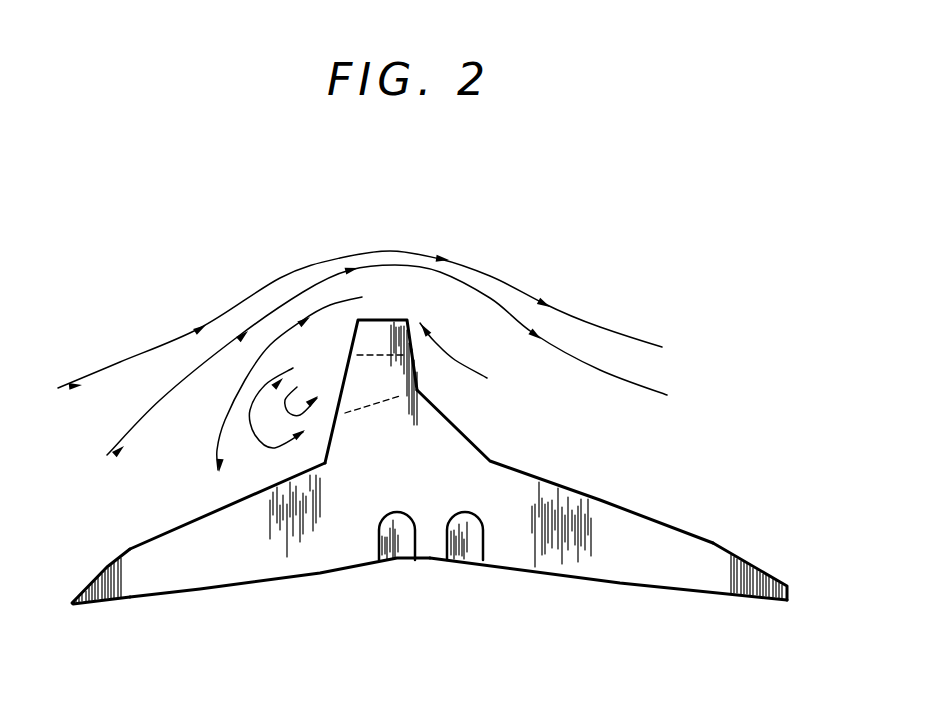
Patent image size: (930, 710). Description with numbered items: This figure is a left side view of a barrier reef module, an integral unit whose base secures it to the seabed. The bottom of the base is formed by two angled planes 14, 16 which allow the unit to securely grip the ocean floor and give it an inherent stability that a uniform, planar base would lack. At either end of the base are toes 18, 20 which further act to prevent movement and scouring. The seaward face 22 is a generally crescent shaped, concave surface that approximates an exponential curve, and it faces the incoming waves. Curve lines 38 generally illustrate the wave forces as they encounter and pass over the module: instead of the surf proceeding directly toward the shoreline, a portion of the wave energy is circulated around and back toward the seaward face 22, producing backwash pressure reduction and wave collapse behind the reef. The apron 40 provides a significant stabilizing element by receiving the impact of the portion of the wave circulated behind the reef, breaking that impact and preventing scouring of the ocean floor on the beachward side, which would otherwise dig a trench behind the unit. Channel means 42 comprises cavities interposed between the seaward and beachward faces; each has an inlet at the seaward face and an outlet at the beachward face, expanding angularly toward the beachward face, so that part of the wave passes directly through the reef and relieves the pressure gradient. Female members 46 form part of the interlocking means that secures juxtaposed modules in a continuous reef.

The angled plane 14 is at (148, 597).
The angled plane 16 is at (688, 592).
The toe 18 is at (748, 565).
The toe 20 is at (110, 567).
The seaward face 22 is at (463, 432).
The curve lines 38 is at (305, 288).
The apron 40 is at (250, 548).
The channel means 42 is at (370, 390).
The female member 46 is at (390, 563).